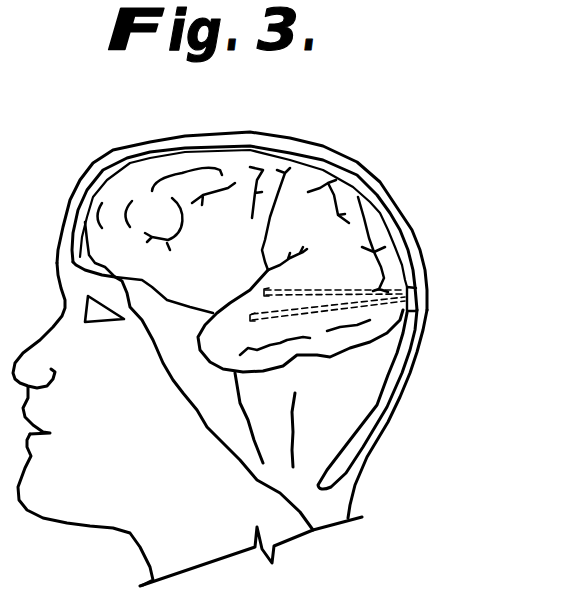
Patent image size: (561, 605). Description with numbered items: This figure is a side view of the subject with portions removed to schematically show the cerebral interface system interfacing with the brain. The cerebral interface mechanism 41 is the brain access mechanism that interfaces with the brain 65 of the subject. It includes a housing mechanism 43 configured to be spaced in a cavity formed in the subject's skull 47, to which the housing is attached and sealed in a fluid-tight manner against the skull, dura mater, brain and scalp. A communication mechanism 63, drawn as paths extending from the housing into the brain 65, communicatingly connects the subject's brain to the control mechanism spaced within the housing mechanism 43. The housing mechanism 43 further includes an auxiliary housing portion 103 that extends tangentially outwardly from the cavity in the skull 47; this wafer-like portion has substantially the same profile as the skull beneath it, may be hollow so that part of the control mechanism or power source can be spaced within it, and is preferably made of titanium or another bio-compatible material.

The cerebral interface mechanism 41 is at (265, 284).
The housing mechanism 43 is at (423, 296).
The skull 47 is at (252, 133).
The communication mechanism 63 is at (307, 313).
The brain 65 is at (335, 214).
The auxiliary housing portion 103 is at (418, 345).